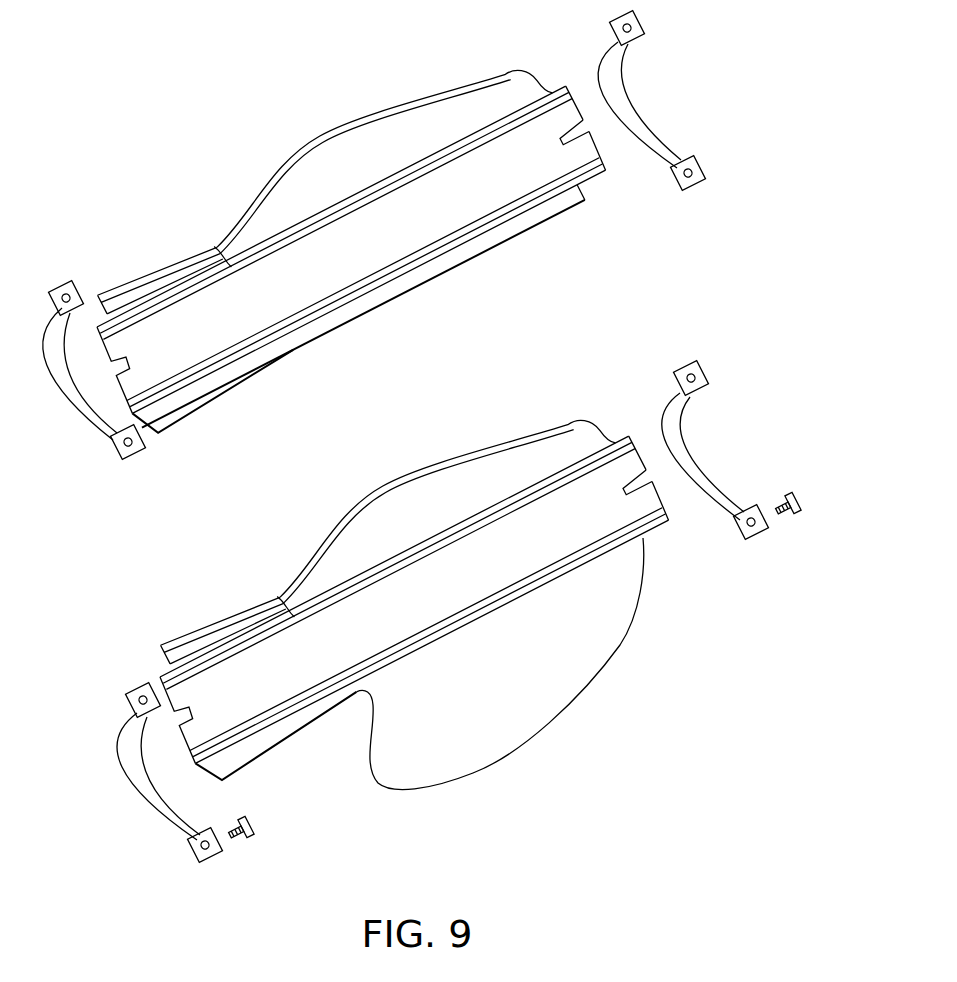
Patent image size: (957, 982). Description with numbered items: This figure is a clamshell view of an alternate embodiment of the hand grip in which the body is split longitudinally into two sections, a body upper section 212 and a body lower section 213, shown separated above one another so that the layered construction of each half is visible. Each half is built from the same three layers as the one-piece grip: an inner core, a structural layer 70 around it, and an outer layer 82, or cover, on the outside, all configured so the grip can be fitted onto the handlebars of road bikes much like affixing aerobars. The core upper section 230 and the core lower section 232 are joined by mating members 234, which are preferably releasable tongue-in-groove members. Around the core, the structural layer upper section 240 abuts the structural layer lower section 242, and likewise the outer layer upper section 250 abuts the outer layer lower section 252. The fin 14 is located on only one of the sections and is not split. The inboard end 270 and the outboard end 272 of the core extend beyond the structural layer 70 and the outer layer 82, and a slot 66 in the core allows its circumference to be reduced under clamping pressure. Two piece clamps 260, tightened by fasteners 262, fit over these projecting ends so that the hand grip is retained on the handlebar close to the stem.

The fin 14 is at (520, 735).
The slot 66 is at (580, 125).
The structural layer 70 is at (350, 315).
The outer layer 82 is at (215, 395).
The body upper section 212 is at (322, 113).
The body lower section 213 is at (400, 463).
The core upper section 230 is at (165, 290).
The core lower section 232 is at (255, 620).
The mating members 234 is at (220, 262).
The structural layer upper section 240 is at (362, 160).
The structural layer lower section 242 is at (373, 540).
The outer layer upper section 250 is at (276, 182).
The outer layer lower section 252 is at (478, 462).
The two piece clamps 260 is at (655, 176).
The fasteners 262 is at (795, 515).
The inboard end 270 is at (100, 322).
The outboard end 272 is at (545, 88).